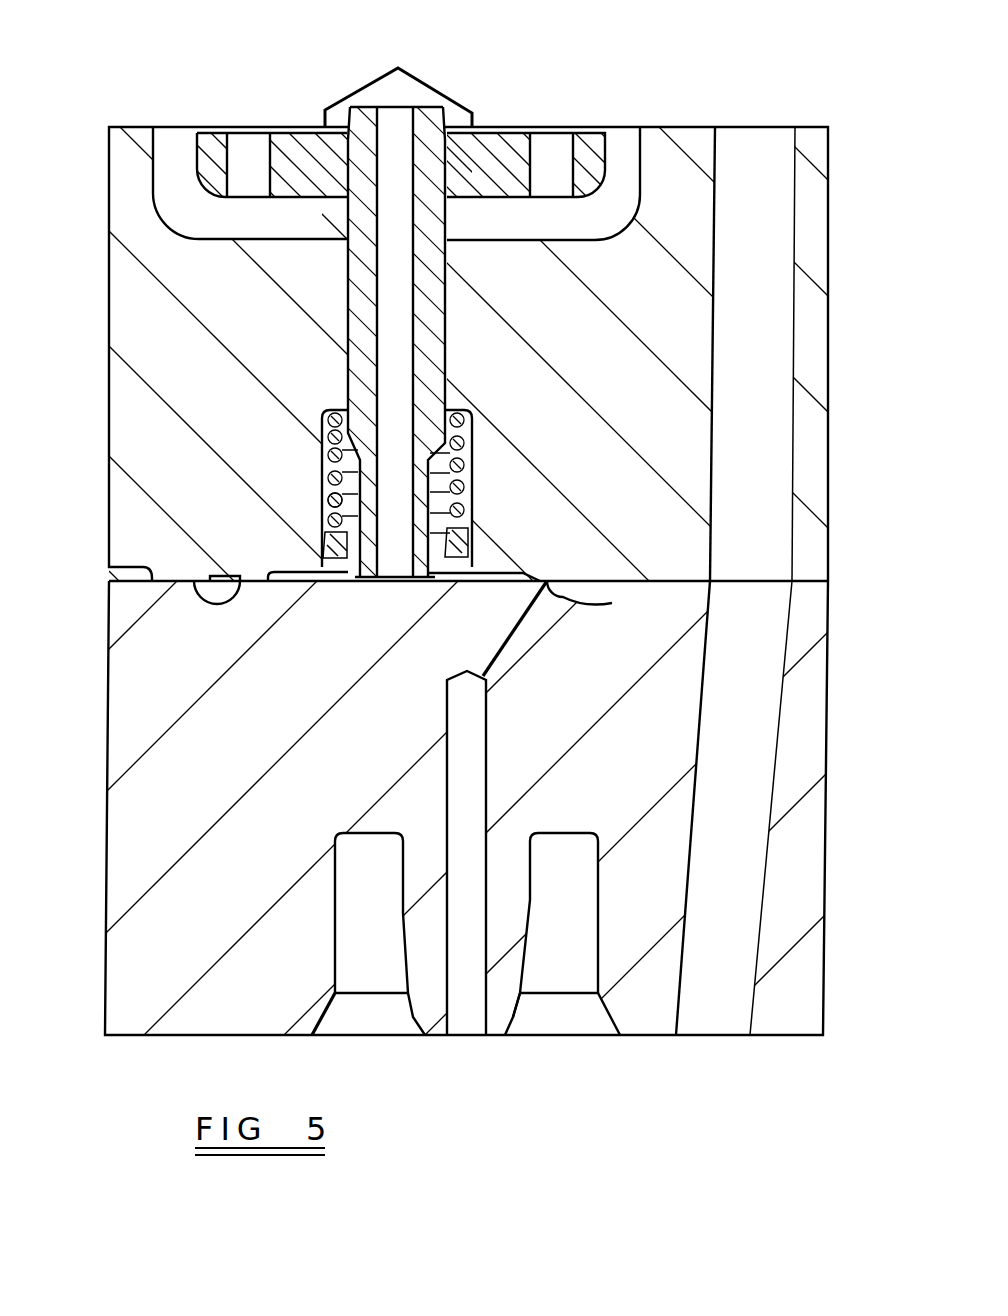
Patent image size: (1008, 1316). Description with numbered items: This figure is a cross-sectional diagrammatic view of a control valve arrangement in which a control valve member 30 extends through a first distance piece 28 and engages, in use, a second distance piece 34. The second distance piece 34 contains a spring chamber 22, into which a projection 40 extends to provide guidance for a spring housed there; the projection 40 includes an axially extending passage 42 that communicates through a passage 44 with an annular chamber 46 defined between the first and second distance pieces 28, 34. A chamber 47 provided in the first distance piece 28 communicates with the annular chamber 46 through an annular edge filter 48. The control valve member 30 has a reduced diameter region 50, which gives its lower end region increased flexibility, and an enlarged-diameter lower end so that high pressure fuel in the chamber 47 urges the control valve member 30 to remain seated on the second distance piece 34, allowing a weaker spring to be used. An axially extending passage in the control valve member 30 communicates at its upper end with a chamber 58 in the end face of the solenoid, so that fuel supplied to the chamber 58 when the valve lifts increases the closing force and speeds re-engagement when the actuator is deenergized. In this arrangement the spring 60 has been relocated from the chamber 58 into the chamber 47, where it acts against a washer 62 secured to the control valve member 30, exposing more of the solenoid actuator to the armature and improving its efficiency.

The spring chamber 22 is at (572, 866).
The first distance piece 28 is at (818, 326).
The control valve member 30 is at (355, 300).
The second distance piece 34 is at (812, 627).
The projection 40 is at (505, 985).
The axially extending passage 42 is at (477, 758).
The passage 44 is at (537, 635).
The annular chamber 46 is at (612, 603).
The chamber 47 is at (333, 583).
The annular edge filter 48 is at (548, 578).
The reduced diameter region 50 is at (330, 465).
The chamber 58 is at (421, 82).
The spring 60 is at (323, 507).
The washer 62 is at (327, 548).